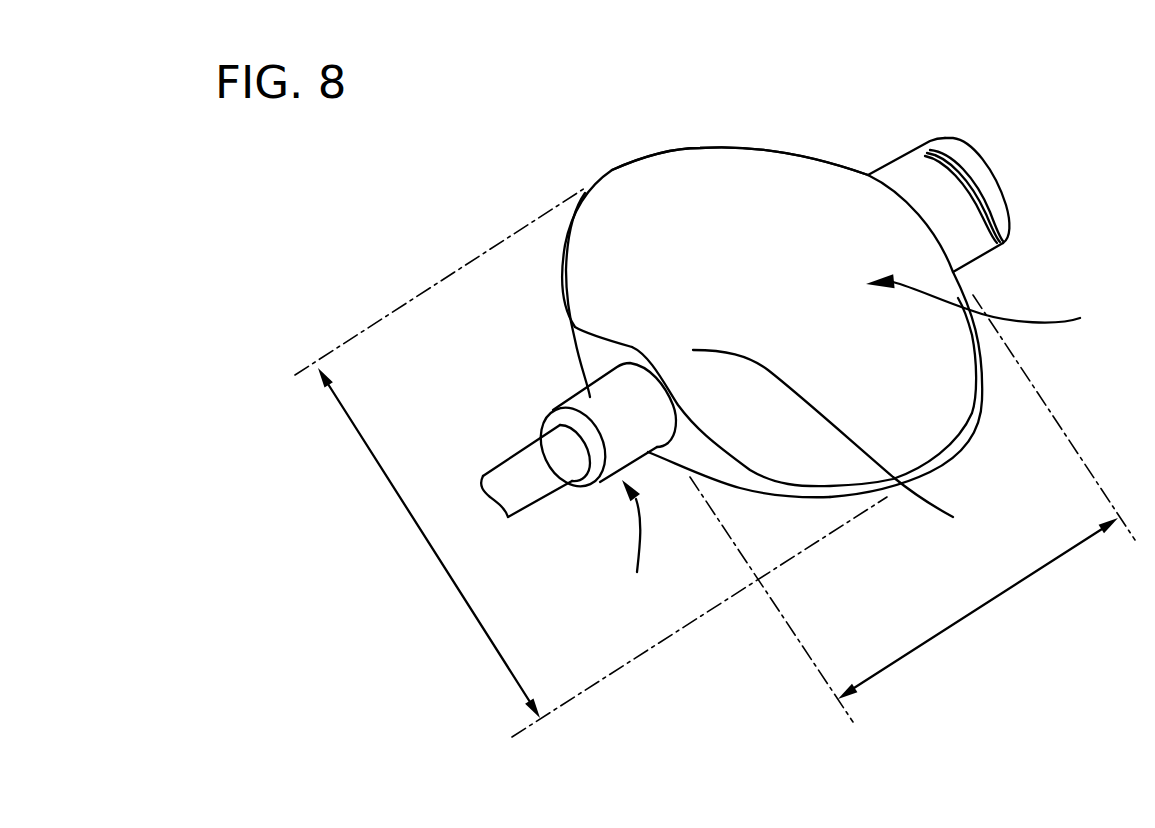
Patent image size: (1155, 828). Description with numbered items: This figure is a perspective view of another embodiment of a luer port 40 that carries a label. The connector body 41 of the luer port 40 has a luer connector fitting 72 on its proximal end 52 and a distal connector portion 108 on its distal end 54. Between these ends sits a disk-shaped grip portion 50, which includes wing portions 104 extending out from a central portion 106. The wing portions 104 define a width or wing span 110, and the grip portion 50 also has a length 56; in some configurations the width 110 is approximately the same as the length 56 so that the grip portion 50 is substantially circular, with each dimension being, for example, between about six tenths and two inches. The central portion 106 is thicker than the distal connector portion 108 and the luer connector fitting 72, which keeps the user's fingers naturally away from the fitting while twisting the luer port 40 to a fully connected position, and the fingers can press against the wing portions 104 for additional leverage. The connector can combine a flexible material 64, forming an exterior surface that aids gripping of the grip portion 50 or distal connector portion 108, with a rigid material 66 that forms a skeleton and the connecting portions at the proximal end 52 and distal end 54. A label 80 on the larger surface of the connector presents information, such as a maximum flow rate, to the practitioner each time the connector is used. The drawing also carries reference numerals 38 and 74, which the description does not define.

The luer port 40 is at (632, 128).
The connector body 41 is at (750, 223).
The grip portion 50 is at (800, 185).
The proximal end 52 is at (934, 126).
The distal end 54 is at (638, 540).
The length 56 is at (963, 617).
The flexible material 64 is at (807, 470).
The rigid material 66 is at (907, 178).
The luer connector fitting 72 is at (983, 253).
The cap rim 74 is at (1003, 243).
The label 80 is at (938, 268).
The wing portions 104 is at (623, 180).
The central portion 106 is at (846, 442).
The distal connector portion 108 is at (588, 397).
The width 110 is at (418, 528).
The tubing 38 is at (523, 488).